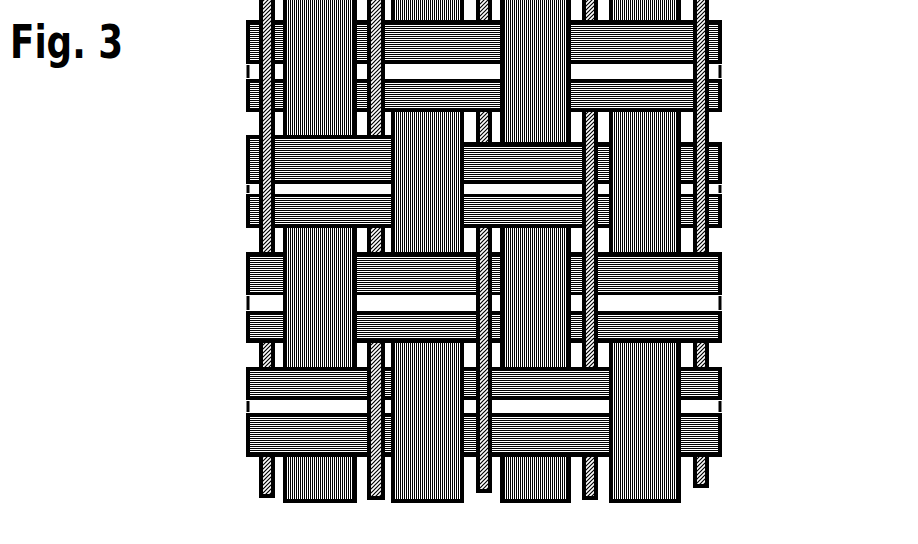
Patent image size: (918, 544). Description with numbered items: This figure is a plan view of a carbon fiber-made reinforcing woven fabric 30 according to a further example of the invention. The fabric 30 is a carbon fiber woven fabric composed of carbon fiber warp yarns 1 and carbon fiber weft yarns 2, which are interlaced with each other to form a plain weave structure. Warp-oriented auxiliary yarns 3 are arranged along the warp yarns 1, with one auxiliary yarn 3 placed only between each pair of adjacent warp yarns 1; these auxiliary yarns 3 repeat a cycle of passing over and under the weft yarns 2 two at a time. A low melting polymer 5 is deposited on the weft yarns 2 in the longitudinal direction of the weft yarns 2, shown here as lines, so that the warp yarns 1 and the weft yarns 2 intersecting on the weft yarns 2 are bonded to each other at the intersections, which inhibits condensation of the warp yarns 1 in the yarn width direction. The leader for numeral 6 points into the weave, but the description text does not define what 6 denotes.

The carbon fiber-made reinforcing woven fabric 30 is at (480, 250).
The carbon fiber warp yarn 1 is at (668, 168).
The carbon fiber weft yarn 2 is at (682, 272).
The warp-oriented auxiliary yarn 3 is at (708, 123).
The low melting polymer 5 is at (713, 305).
The binder warp yarn 6 is at (613, 340).